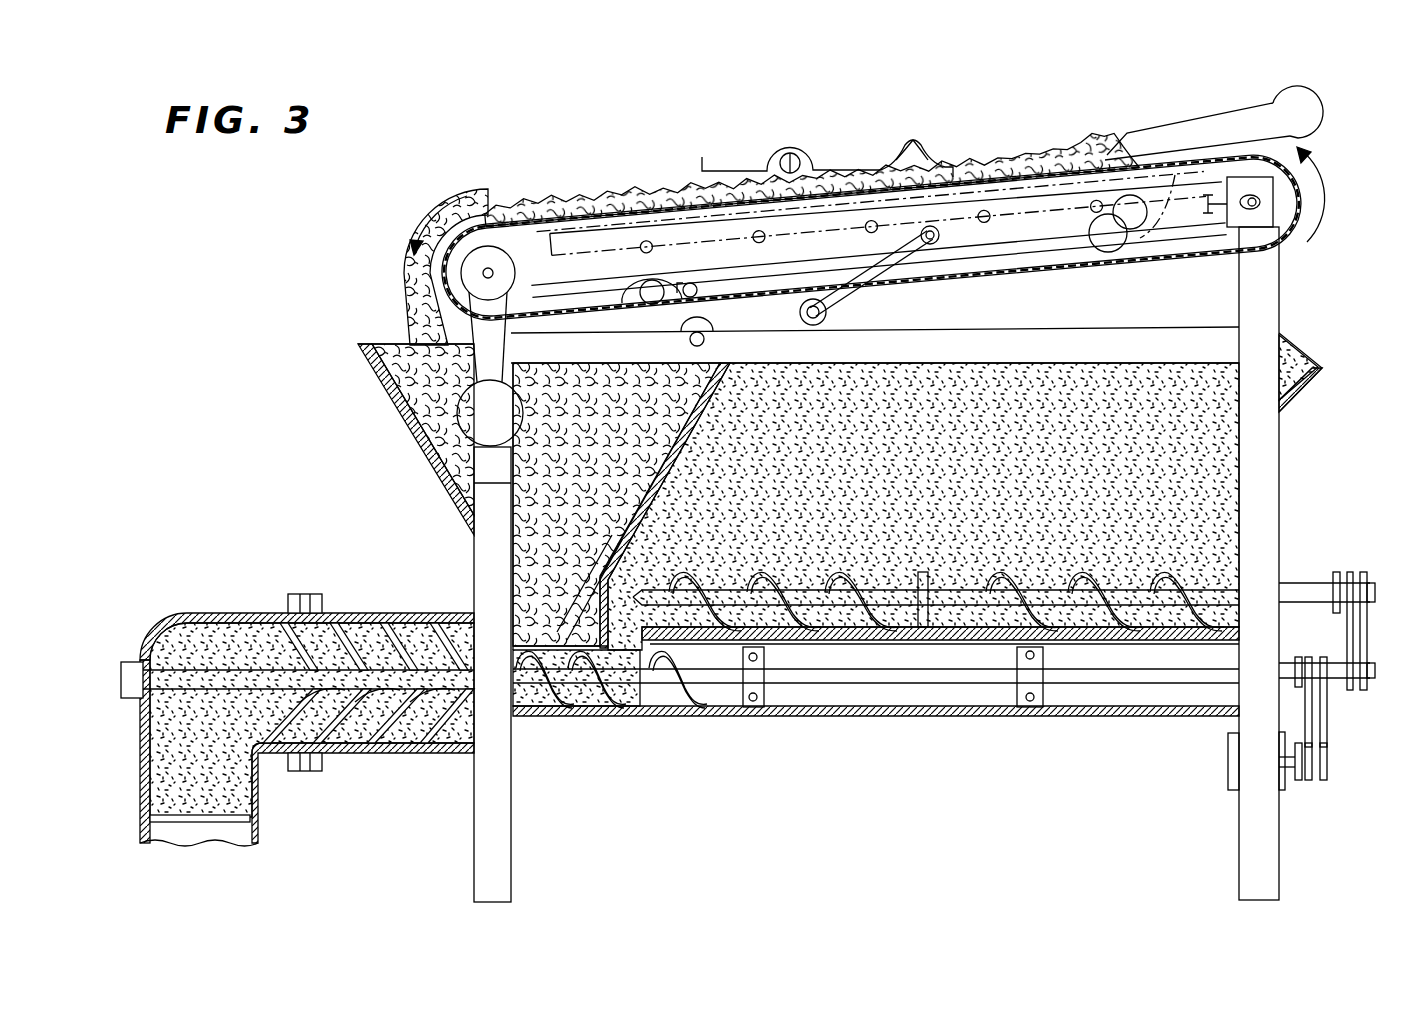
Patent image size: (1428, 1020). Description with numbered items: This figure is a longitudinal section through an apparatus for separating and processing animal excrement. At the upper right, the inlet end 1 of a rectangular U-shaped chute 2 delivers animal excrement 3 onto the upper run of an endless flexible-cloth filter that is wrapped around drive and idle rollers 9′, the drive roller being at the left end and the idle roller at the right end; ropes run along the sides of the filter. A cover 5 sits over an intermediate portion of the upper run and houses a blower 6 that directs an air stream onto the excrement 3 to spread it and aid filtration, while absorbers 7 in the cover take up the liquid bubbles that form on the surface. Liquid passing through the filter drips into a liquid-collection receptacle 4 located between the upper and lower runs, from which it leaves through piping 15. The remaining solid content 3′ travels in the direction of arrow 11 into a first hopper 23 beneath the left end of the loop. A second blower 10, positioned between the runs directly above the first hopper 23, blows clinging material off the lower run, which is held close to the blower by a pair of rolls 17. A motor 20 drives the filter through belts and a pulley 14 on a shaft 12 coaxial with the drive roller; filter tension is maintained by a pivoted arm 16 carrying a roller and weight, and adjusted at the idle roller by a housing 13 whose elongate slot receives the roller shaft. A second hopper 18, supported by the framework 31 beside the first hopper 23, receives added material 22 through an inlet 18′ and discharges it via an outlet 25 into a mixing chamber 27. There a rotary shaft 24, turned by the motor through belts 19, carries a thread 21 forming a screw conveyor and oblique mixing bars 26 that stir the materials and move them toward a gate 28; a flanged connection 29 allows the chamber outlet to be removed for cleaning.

The inlet end 1 is at (1306, 100).
The chute 2 is at (1240, 122).
The animal excrement 3 is at (1066, 160).
The solid content of the waste material 3′ is at (432, 448).
The liquid-collection receptacle 4 is at (588, 225).
The cover 5 is at (826, 166).
The blower 6 is at (790, 155).
The absorbers 7 is at (913, 142).
The drive and idle rollers 9′ is at (505, 196).
The blower 10 is at (653, 290).
The arrow 11 is at (437, 214).
The shaft 12 is at (483, 280).
The housing 13 is at (1262, 214).
The pulley 14 is at (468, 262).
The piping 15 is at (1138, 232).
The arm 16 is at (1114, 250).
The rolls 17 is at (698, 325).
The second hopper 18 is at (848, 637).
The inlet 18′ is at (1294, 394).
The belts 19 is at (1365, 628).
The motor 20 is at (470, 428).
The thread 21 is at (664, 668).
The material to be added 22 is at (1208, 497).
The first hopper 23 is at (388, 400).
The rotary shaft 24 is at (130, 672).
The outlet 25 is at (608, 650).
The mixing bars 26 is at (397, 621).
The mixing chamber 27 is at (352, 617).
The gate 28 is at (250, 820).
The flanged connection 29 is at (300, 594).
The framework 31 is at (490, 547).